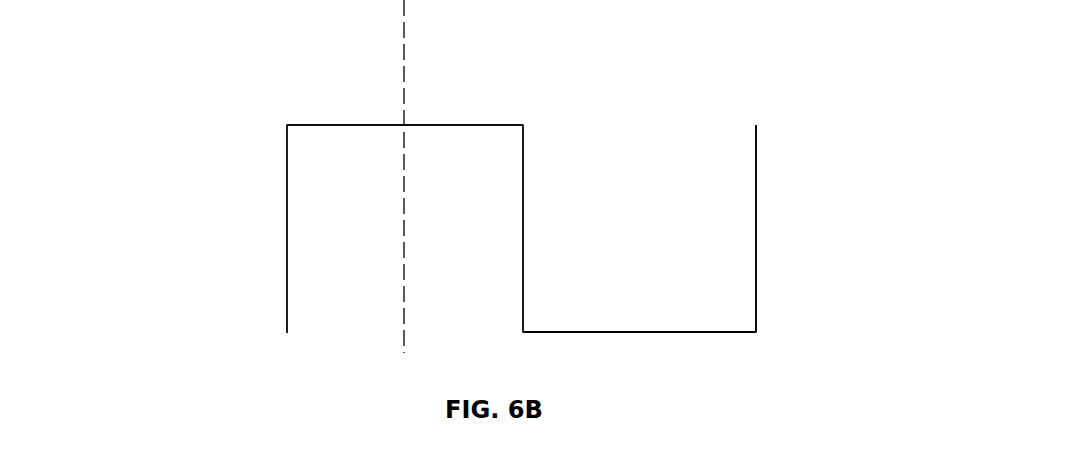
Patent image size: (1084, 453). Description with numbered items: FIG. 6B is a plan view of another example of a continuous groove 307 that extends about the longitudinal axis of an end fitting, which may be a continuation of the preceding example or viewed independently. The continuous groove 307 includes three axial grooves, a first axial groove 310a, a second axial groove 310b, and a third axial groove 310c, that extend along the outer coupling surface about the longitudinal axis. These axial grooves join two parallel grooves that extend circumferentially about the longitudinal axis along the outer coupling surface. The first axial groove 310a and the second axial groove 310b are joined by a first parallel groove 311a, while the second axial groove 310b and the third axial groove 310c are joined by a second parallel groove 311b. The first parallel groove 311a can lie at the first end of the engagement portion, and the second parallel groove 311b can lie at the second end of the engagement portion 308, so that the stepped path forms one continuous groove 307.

The continuous groove 307 is at (287, 334).
The first axial groove 310a is at (287, 212).
The first parallel groove 311a is at (375, 125).
The second axial groove 310b is at (523, 162).
The second parallel groove 311b is at (621, 333).
The third axial groove 310c is at (756, 182).
The second end of the engagement portion 308 is at (773, 321).